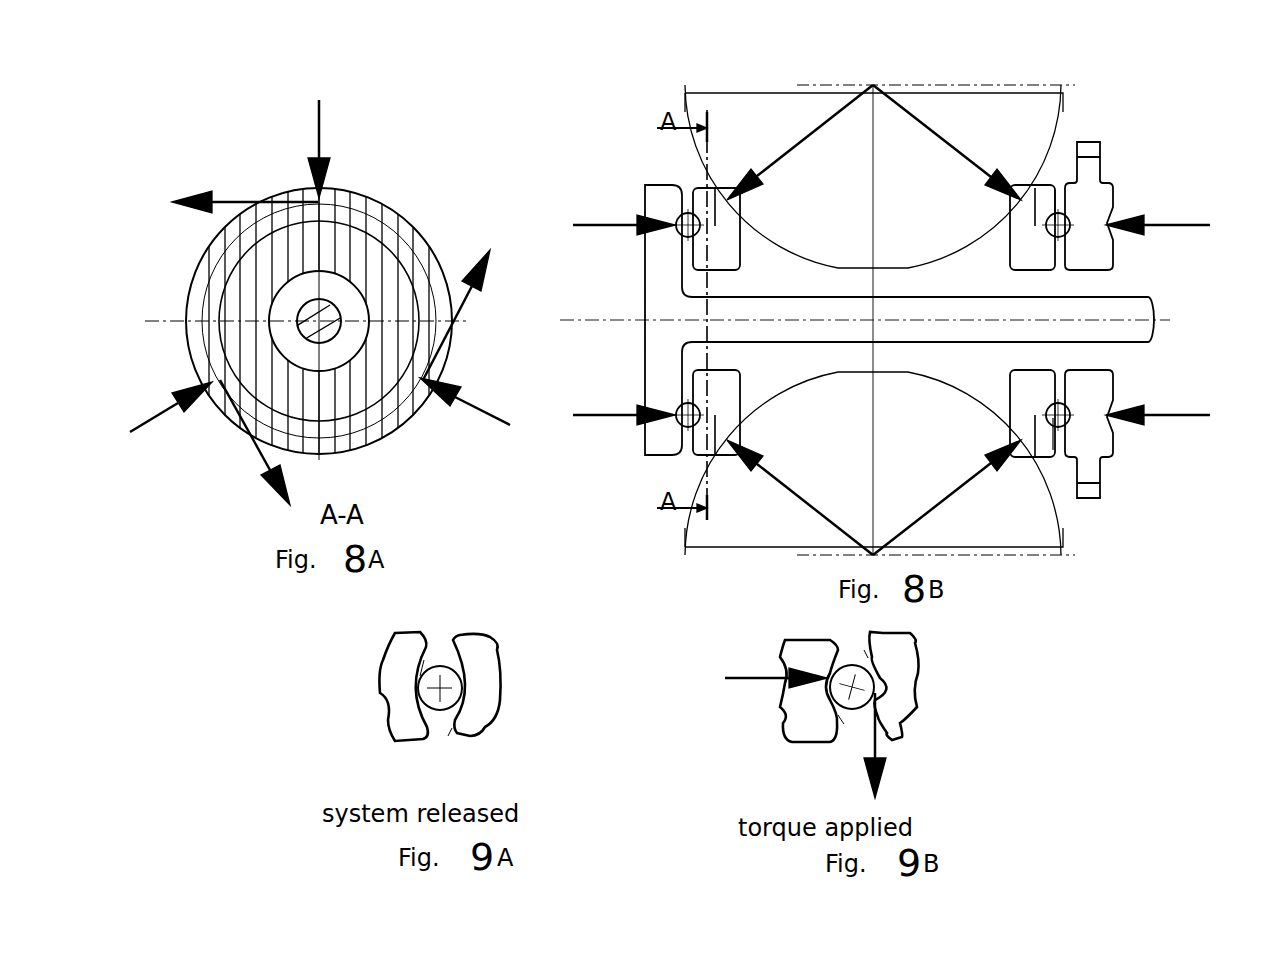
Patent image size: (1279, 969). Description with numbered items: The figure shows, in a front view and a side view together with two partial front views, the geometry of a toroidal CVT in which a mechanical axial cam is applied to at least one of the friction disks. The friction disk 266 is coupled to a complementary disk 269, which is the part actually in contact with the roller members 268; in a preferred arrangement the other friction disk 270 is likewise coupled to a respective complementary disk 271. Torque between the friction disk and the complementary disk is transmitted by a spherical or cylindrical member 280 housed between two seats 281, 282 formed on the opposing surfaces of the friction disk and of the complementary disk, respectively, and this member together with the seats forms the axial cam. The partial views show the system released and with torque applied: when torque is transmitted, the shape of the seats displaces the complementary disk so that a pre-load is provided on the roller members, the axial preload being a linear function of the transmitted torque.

In FIG. 8A, the friction disk 266 is at (300, 315).
In FIG. 8B, the friction disk 266 is at (1085, 331).
In FIG. 9A, the friction disk 266 is at (397, 655).
In FIG. 9B, the friction disk 266 is at (797, 703).
In FIG. 8B, the roller members 268 is at (1015, 120).
In FIG. 8A, the complementary disk 269 is at (385, 208).
In FIG. 8B, the complementary disk 269 is at (723, 223).
In FIG. 9A, the complementary disk 269 is at (480, 652).
In FIG. 9B, the complementary disk 269 is at (905, 690).
In FIG. 8B, the friction disk 270 is at (1095, 200).
In FIG. 8B, the complementary disk 271 is at (1047, 220).
In FIG. 8B, the spherical or cylindrical member 280 is at (678, 240).
In FIG. 9A, the spherical or cylindrical member 280 is at (457, 702).
In FIG. 9B, the spherical or cylindrical member 280 is at (880, 703).
In FIG. 9A, the seat 281 is at (423, 663).
In FIG. 9B, the seat 281 is at (843, 723).
In FIG. 9A, the seat 282 is at (445, 735).
In FIG. 9B, the seat 282 is at (867, 653).